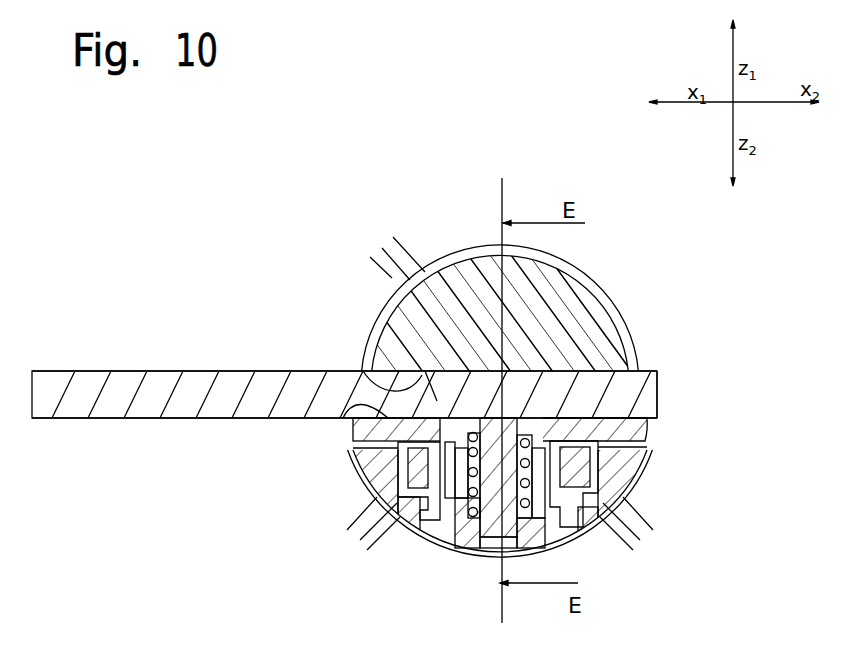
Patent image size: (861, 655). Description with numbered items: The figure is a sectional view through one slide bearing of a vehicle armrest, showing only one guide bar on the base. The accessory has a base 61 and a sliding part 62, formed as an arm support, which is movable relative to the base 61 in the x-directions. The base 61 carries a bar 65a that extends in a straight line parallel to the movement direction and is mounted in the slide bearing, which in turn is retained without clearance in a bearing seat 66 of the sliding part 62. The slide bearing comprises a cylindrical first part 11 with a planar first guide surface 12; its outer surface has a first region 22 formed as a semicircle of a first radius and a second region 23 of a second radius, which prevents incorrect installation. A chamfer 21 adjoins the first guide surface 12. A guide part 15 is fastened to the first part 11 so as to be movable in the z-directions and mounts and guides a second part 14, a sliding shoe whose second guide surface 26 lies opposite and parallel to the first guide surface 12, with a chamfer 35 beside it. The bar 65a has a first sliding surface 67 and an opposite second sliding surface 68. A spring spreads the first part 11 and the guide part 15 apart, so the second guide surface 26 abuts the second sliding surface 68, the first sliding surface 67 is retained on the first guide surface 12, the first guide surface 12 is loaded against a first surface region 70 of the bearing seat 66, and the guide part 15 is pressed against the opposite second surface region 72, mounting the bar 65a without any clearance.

The first part 11 is at (590, 270).
The first guide surface 12 is at (363, 369).
The second part 14 is at (647, 437).
The guide part 15 is at (623, 467).
The chamfer 21 is at (656, 368).
The first region of the outer surface 22 is at (638, 308).
The second region of the outer surface 23 is at (352, 470).
The second guide surface 26 is at (358, 399).
The chamfer 35 is at (658, 423).
The base 61 is at (85, 379).
The sliding part 62 is at (667, 582).
The bar 65a is at (157, 386).
The bearing seat 66 is at (371, 240).
The first sliding surface 67 is at (240, 370).
The second sliding surface 68 is at (197, 433).
The first surface region 70 is at (462, 270).
The second surface region 72 is at (433, 533).